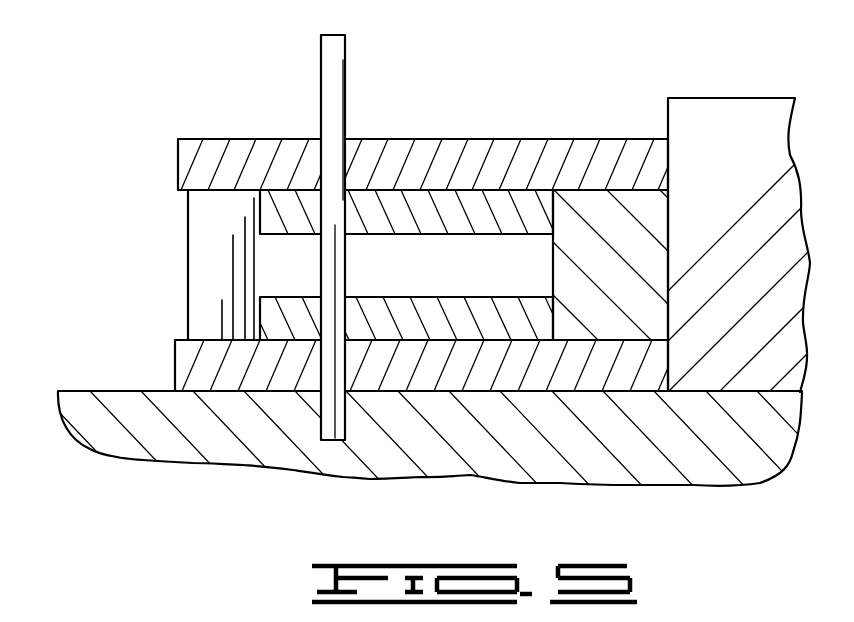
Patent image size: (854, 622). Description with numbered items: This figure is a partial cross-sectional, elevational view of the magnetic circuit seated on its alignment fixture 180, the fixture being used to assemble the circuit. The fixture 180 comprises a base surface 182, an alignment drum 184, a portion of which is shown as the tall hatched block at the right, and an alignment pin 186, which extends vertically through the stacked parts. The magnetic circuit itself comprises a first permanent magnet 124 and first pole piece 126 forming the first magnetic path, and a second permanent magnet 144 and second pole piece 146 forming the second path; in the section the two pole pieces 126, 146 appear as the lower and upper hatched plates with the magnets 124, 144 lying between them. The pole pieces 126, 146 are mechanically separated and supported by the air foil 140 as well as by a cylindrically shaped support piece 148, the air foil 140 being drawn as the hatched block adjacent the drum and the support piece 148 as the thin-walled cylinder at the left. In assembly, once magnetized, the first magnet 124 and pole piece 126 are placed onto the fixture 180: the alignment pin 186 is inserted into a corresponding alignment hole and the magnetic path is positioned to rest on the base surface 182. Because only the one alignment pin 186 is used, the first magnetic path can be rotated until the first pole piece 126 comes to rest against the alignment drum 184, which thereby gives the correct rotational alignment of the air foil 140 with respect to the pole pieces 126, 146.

The alignment fixture 180 is at (434, 272).
The base surface 182 is at (446, 415).
The alignment drum 184 is at (711, 224).
The alignment pin 186 is at (279, 226).
The second pole piece 146 is at (404, 132).
The second permanent magnet 144 is at (398, 161).
The first permanent magnet 124 is at (406, 409).
The first pole piece 126 is at (403, 435).
The air foil 140 is at (549, 265).
The support piece 148 is at (163, 264).